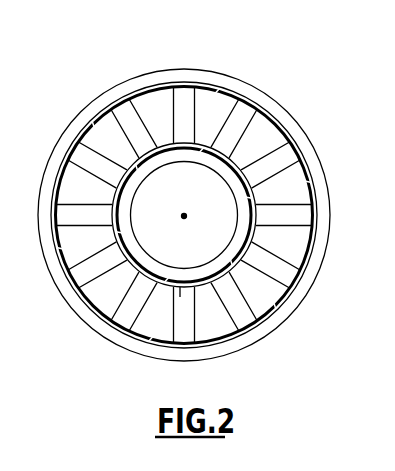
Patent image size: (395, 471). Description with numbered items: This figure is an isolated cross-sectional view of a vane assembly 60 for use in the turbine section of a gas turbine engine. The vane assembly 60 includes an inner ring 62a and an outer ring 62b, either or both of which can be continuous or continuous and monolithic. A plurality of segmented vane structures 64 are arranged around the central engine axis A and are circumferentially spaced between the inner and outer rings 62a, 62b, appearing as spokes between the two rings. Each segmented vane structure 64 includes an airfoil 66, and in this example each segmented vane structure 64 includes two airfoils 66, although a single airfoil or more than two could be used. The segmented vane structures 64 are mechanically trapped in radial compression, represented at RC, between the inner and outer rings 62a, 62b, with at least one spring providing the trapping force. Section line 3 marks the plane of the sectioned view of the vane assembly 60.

The vane assembly 60 is at (74, 336).
The inner ring 62a is at (132, 212).
The outer ring 62b is at (136, 78).
The segmented vane structures 64 is at (158, 128).
The airfoil 66 is at (196, 318).
The radial compression RC is at (268, 238).
The central engine axis A is at (186, 217).
The section line 3- 3 is at (313, 143).